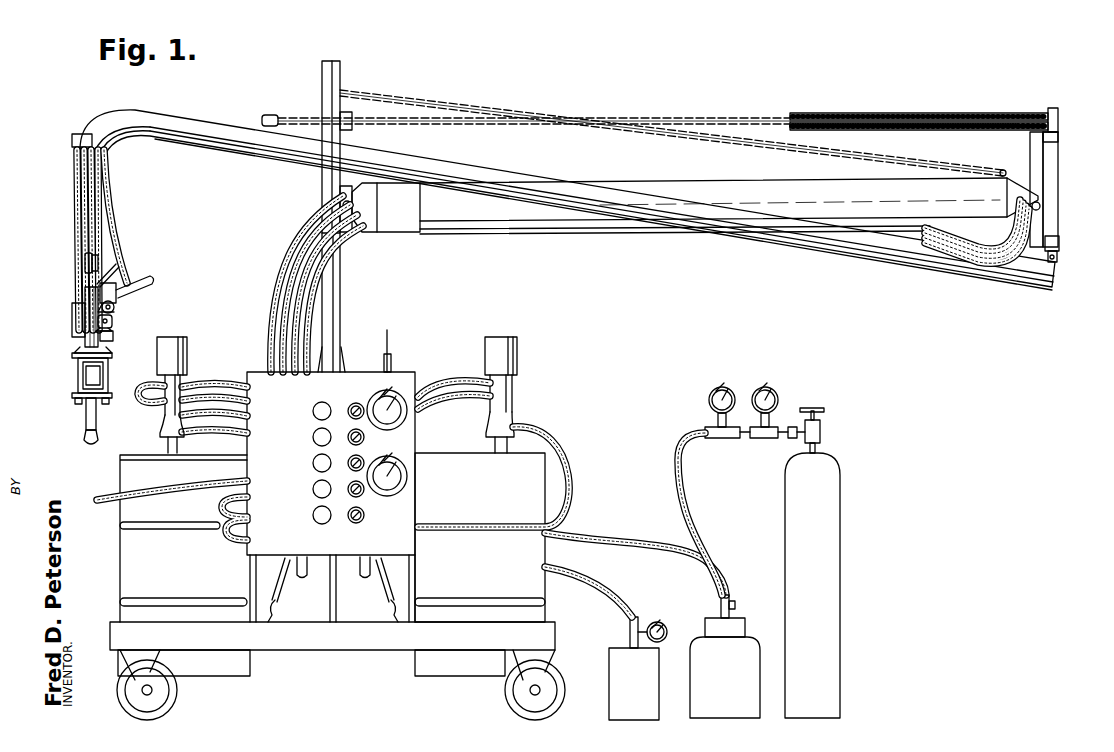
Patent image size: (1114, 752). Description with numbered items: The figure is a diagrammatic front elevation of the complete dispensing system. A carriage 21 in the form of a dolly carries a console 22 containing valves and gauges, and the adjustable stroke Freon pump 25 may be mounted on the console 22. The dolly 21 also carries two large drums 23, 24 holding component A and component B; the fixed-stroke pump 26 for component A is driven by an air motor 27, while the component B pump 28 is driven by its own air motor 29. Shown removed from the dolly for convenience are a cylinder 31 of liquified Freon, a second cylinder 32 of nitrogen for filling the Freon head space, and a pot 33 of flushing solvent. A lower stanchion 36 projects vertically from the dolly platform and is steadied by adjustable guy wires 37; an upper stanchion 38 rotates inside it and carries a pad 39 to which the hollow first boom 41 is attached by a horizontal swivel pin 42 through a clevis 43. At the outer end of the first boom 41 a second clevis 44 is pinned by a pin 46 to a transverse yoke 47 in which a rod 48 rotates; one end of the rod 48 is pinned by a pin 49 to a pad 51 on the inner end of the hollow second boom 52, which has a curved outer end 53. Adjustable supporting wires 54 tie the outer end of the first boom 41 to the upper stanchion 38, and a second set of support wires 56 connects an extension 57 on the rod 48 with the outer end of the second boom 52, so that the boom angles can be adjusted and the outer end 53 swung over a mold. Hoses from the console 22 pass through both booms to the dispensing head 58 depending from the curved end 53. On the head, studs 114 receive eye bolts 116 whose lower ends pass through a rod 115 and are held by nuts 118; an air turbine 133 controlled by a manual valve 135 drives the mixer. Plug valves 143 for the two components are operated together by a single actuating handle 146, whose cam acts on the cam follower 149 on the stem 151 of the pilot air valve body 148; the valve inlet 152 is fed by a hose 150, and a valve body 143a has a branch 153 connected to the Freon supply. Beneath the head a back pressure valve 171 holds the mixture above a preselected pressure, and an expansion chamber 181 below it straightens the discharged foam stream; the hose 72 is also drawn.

The carriage 21 is at (355, 640).
The console 22 is at (412, 508).
The component A drum 23 is at (132, 560).
The component B drum 24 is at (527, 565).
The pump 25 is at (390, 362).
The pump 26 is at (168, 424).
The air motor 27 is at (183, 385).
The pump 28 is at (516, 420).
The air motor 29 is at (514, 388).
The cylinder 31 is at (736, 677).
The second cylinder 32 is at (830, 560).
The pot 33 is at (618, 667).
The lower stanchion 36 is at (338, 304).
The adjustable guy wires 37 is at (283, 580).
The upper stanchion 38 is at (330, 68).
The pad 39 is at (335, 195).
The first boom 41 is at (490, 224).
The horizontal swivel pin 42 is at (352, 205).
The clevis 43 is at (370, 216).
The second clevis 44 is at (1018, 196).
The pin 46 is at (1042, 206).
The transverse yoke 47 is at (1040, 160).
The rod 48 is at (1056, 224).
The pin 49 is at (1058, 246).
The pad 51 is at (1055, 258).
The second boom 52 is at (832, 246).
The curved outer end 53 is at (100, 128).
The adjustable supporting wires 54 is at (408, 98).
The adjustable support wires 56 is at (730, 118).
The extension 57 is at (994, 114).
The dispensing head 58 is at (88, 382).
The hose 72 is at (236, 440).
The studs 114 is at (76, 356).
The rod 115 is at (76, 397).
The eye bolts 116 is at (80, 372).
The nuts 118 is at (78, 404).
The air turbine 133 is at (88, 327).
The manual valve 135 is at (84, 258).
The plug valves 143 is at (116, 334).
The valve body 143a is at (72, 308).
The actuating handle 146 is at (128, 290).
The pilot air valve body 148 is at (115, 276).
The cam follower 149 is at (116, 308).
The hose 150 is at (90, 268).
The stem 151 is at (152, 296).
The valve inlet 152 is at (122, 286).
The branch 153 is at (103, 275).
The back pressure valve 171 is at (85, 418).
The expansion chamber 181 is at (88, 442).